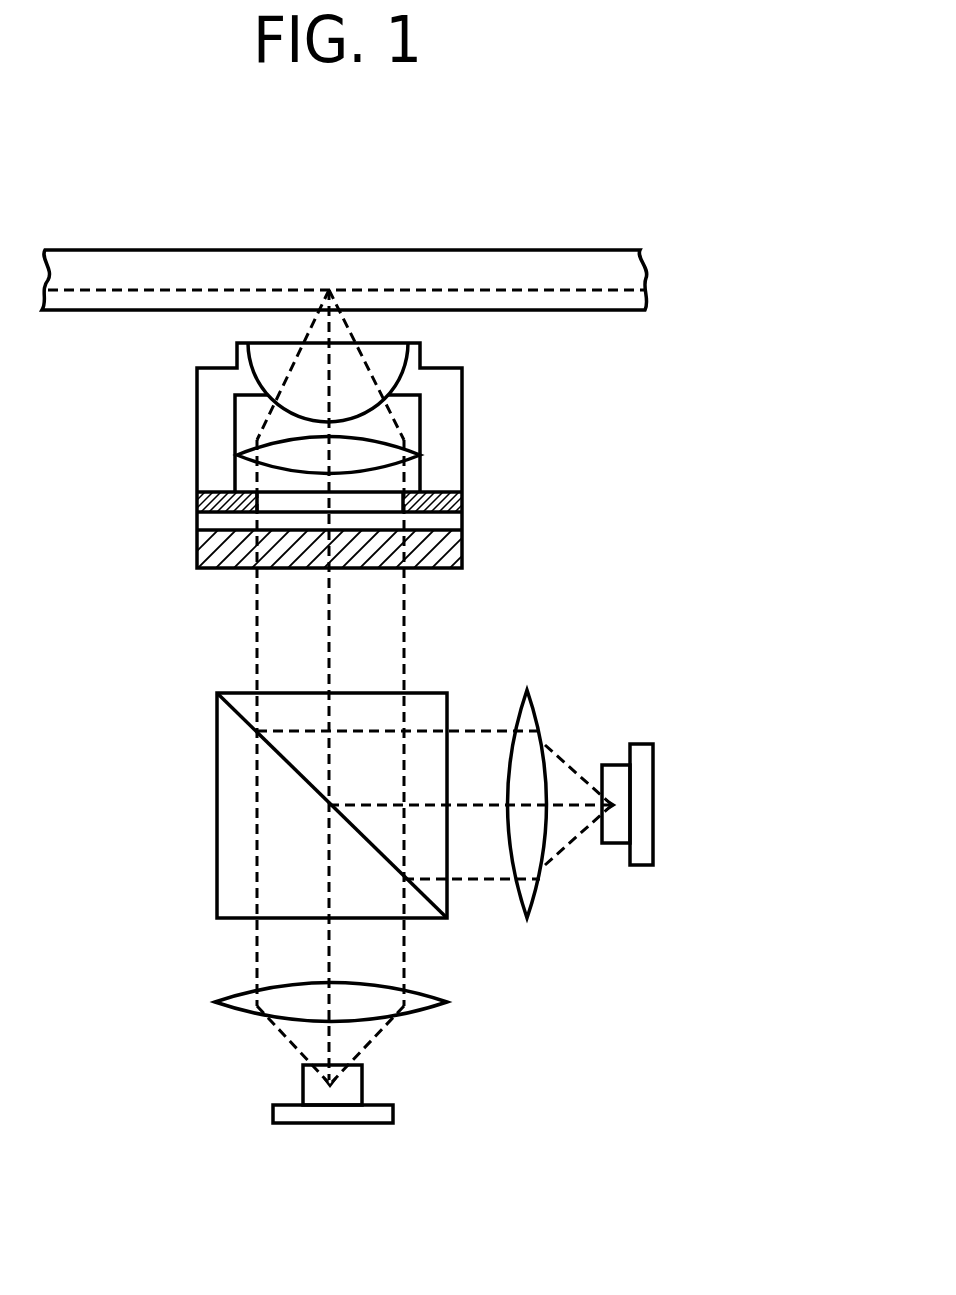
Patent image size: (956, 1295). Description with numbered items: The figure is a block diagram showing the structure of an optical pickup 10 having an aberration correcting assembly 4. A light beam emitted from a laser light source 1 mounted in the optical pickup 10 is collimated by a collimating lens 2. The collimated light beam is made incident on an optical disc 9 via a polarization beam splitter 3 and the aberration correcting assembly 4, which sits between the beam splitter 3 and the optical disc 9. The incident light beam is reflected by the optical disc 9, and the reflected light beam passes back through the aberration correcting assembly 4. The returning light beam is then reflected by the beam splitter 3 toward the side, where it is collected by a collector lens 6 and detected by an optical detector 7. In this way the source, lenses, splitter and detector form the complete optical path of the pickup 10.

The laser light source 1 is at (273, 1118).
The collimating lens 2 is at (232, 993).
The polarization beam splitter 3 is at (217, 733).
The aberration correcting assembly 4 is at (196, 462).
The collector lens 6 is at (537, 702).
The optical detector 7 is at (653, 762).
The optical disc 9 is at (650, 262).
The optical pickup 10 is at (648, 488).